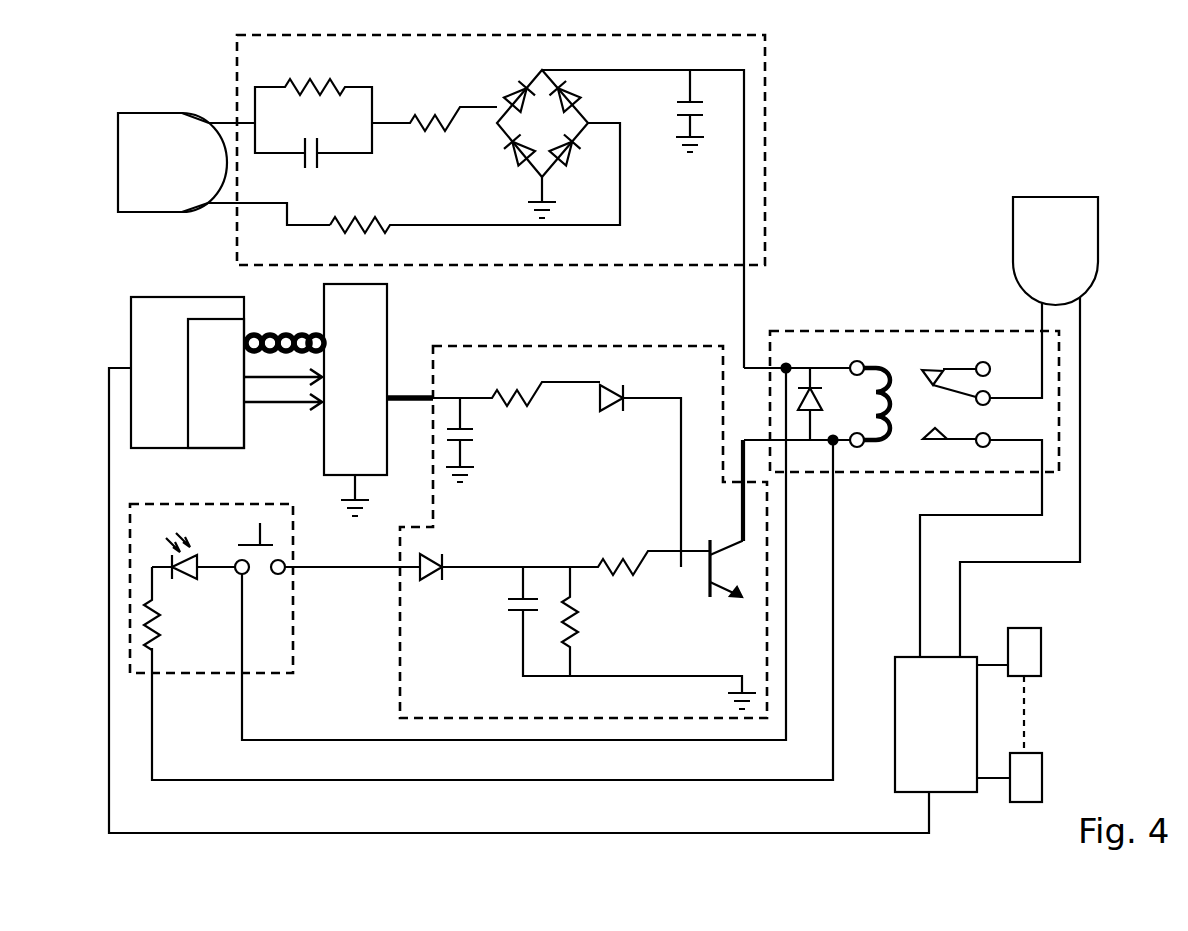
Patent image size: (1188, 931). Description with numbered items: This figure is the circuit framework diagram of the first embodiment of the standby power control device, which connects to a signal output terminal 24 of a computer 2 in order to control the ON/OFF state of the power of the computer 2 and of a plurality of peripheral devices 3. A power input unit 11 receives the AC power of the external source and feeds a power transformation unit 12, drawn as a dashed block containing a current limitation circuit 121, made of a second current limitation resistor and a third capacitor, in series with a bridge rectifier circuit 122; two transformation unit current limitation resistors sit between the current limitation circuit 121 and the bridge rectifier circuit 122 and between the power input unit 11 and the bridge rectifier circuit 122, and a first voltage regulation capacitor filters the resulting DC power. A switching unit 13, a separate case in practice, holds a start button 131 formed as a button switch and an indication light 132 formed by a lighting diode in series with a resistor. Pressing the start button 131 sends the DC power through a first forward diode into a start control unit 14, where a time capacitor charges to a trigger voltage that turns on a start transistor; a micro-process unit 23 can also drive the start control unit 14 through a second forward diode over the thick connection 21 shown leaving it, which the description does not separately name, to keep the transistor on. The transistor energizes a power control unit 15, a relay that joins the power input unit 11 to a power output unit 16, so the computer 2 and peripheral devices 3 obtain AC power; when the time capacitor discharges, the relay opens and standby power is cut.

The computer 2 is at (519, 539).
The peripheral devices 3 is at (1043, 655).
The power input unit 11 is at (172, 113).
The power transformation unit 12 is at (767, 77).
The switching unit 13 is at (247, 607).
The start control unit 14 is at (397, 677).
The power control unit 15 is at (897, 328).
The power output unit 16 is at (892, 765).
The output line 21 is at (398, 395).
The micro-process unit 23 is at (323, 432).
The signal output terminal 24 is at (218, 318).
The current limitation circuit 121 is at (355, 130).
The bridge rectifier circuit 122 is at (498, 122).
The start button 131 is at (282, 532).
The indication light 132 is at (173, 552).